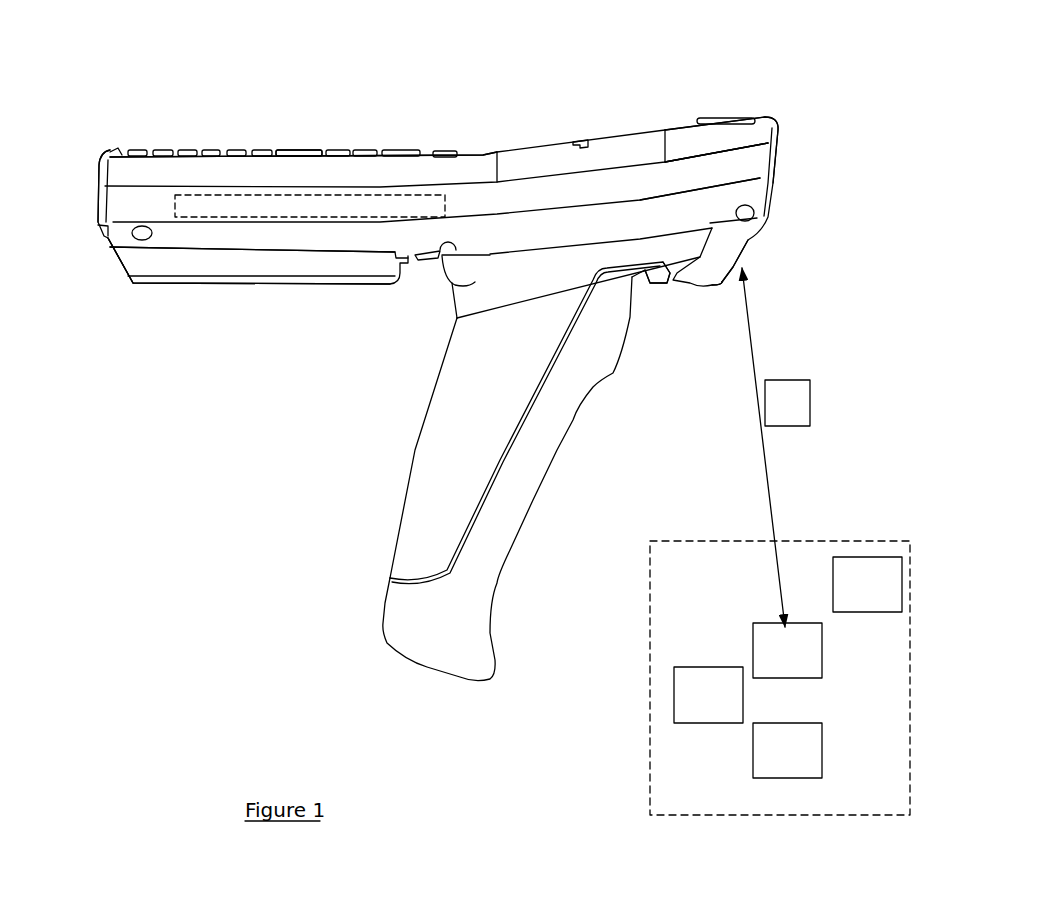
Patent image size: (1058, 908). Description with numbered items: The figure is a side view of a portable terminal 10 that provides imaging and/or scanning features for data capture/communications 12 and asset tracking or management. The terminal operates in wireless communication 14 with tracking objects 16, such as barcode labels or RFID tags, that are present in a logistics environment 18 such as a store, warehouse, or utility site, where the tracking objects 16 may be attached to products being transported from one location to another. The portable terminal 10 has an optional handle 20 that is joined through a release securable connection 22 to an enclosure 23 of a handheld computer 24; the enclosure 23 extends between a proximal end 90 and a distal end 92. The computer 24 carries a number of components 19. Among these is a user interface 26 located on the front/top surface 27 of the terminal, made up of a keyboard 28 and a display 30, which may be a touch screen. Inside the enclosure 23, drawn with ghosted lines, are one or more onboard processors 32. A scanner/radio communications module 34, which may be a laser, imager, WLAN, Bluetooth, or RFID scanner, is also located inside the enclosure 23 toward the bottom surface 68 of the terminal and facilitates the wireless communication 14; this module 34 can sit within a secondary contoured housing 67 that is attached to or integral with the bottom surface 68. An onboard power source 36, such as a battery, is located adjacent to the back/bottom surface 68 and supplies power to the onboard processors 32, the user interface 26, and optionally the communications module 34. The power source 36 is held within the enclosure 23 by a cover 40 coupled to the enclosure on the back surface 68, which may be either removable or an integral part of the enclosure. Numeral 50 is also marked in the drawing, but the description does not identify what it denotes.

The portable terminal 10 is at (228, 500).
The data capture/communications 12 is at (799, 415).
The wireless communication 14 is at (748, 344).
The tracking objects 16 is at (878, 596).
The logistics environment 18 is at (876, 801).
The components 19 is at (380, 75).
The handle 20 is at (377, 643).
The release securable connection 22 is at (510, 256).
The enclosure 23 is at (742, 165).
The handheld computer 24 is at (185, 86).
The user interface 26 is at (463, 133).
The front/top surface 27 is at (525, 140).
The keyboard 28 is at (285, 153).
The display 30 is at (640, 133).
The onboard processors 32 is at (275, 212).
The scanner/radio communications module 34 is at (728, 253).
The onboard power source 36 is at (310, 267).
The cover 40 is at (243, 288).
The connector 50 is at (722, 282).
The secondary contoured housing 67 is at (693, 283).
The bottom surface 68 is at (357, 300).
The proximal end 90 is at (106, 132).
The distal end 92 is at (798, 108).